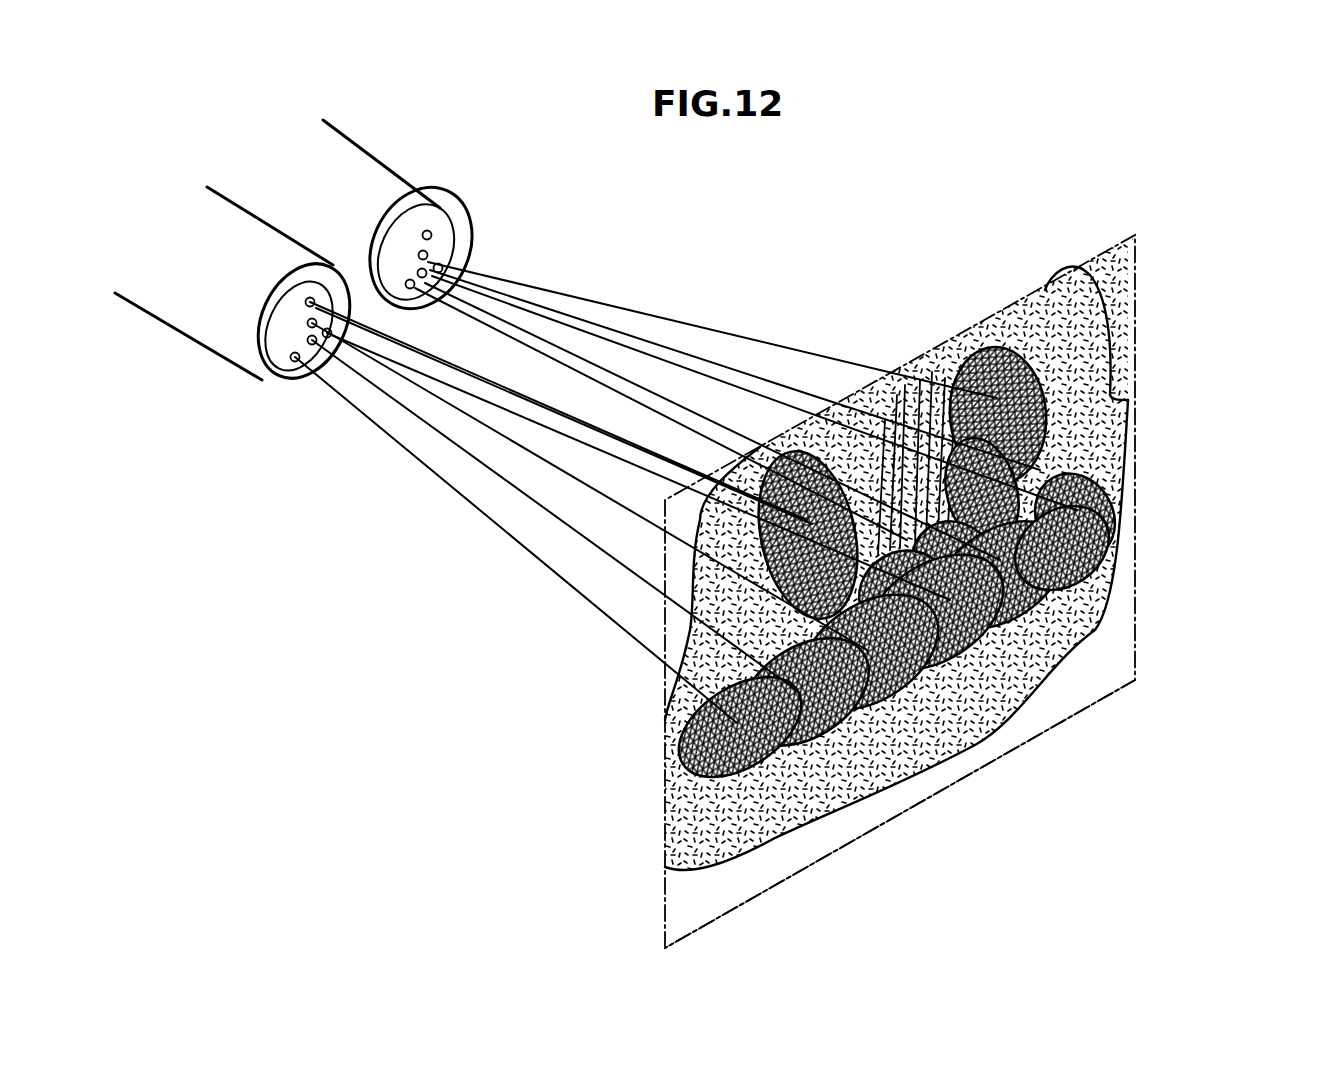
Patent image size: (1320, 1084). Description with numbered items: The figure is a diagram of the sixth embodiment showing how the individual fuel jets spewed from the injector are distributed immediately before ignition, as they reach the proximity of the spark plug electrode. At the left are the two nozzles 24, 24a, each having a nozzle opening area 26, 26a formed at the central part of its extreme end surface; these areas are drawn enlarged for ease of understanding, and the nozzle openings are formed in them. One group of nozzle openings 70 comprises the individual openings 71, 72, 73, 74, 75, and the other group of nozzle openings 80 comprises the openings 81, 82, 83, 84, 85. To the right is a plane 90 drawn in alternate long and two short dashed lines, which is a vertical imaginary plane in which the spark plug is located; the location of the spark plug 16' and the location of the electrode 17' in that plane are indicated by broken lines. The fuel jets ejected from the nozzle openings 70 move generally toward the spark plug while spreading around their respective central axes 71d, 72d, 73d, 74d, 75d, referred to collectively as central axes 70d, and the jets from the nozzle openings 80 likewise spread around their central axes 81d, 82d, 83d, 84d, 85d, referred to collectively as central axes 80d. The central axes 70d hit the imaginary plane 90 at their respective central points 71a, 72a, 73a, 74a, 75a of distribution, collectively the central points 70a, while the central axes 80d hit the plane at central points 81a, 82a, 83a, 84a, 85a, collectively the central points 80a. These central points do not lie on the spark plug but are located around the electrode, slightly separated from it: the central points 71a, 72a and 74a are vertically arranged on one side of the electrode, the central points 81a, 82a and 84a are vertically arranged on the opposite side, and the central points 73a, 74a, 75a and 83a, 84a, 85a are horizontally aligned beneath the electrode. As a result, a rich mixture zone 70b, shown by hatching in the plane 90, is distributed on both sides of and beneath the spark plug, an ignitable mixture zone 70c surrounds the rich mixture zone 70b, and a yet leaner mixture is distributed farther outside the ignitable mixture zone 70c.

The location of the spark plug 16' is at (880, 440).
The location of the electrode 17' is at (931, 420).
The nozzle 24 is at (298, 256).
The nozzle 24a is at (413, 190).
The nozzle opening area 26 is at (335, 298).
The nozzle opening area 26a is at (448, 207).
The nozzle openings 70 is at (222, 374).
The nozzle opening 71 is at (285, 305).
The nozzle opening 72 is at (288, 325).
The nozzle opening 73 is at (292, 350).
The nozzle opening 74 is at (300, 372).
The nozzle opening 75 is at (313, 400).
The central points of fuel jet distribution 70a is at (796, 658).
The central point of fuel jet distribution 71a is at (687, 726).
The central point of fuel jet distribution 72a is at (680, 695).
The central point of fuel jet distribution 73a is at (695, 735).
The central point of fuel jet distribution 74a is at (700, 762).
The central point of fuel jet distribution 75a is at (700, 790).
The rich mixture zone 70b is at (980, 372).
The ignitable mixture zone 70c is at (1040, 300).
The central axes 70d is at (586, 512).
The central axis 71d is at (430, 380).
The central axis 72d is at (478, 405).
The central axis 73d is at (502, 460).
The central axis 74d is at (522, 480).
The central axis 75d is at (562, 500).
The nozzle openings 80 is at (517, 216).
The nozzle opening 81 is at (458, 218).
The nozzle opening 82 is at (470, 232).
The nozzle opening 83 is at (466, 248).
The nozzle opening 84 is at (468, 262).
The nozzle opening 85 is at (486, 269).
The central points of fuel jet distribution 80a is at (1024, 462).
The central point of fuel jet distribution 81a is at (1234, 464).
The central point of fuel jet distribution 82a is at (1080, 400).
The central point of fuel jet distribution 83a is at (1090, 430).
The central point of fuel jet distribution 84a is at (1095, 455).
The central point of fuel jet distribution 85a is at (1092, 476).
The central axes 80d is at (746, 355).
The central axis 81d is at (565, 335).
The central axis 82d is at (600, 352).
The central axis 83d is at (638, 372).
The central axis 84d is at (665, 388).
The central axis 85d is at (661, 414).
The plane 90 is at (1150, 606).